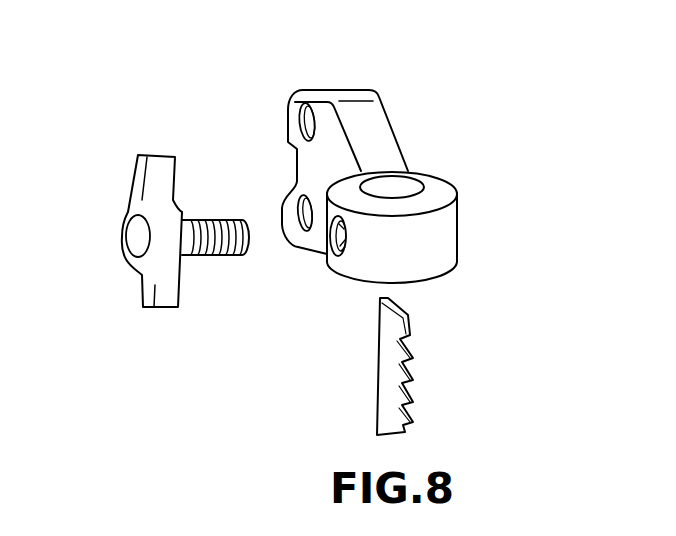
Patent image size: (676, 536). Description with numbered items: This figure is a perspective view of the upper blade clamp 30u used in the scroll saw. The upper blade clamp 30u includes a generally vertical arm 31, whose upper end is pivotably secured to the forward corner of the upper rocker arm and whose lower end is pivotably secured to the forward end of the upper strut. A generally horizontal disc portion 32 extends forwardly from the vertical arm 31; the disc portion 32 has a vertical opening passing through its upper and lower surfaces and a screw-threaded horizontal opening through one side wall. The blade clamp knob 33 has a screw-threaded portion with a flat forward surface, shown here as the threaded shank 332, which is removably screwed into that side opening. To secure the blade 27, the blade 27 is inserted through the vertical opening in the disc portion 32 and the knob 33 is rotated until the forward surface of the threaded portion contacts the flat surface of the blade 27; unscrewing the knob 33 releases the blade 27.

The upper blade clamp 30u is at (413, 133).
The generally vertical arm 31 is at (320, 93).
The disc portion 32 is at (458, 234).
The blade 27 is at (413, 388).
The blade clamp knob 33 is at (147, 298).
The threaded bolt 332 is at (222, 253).